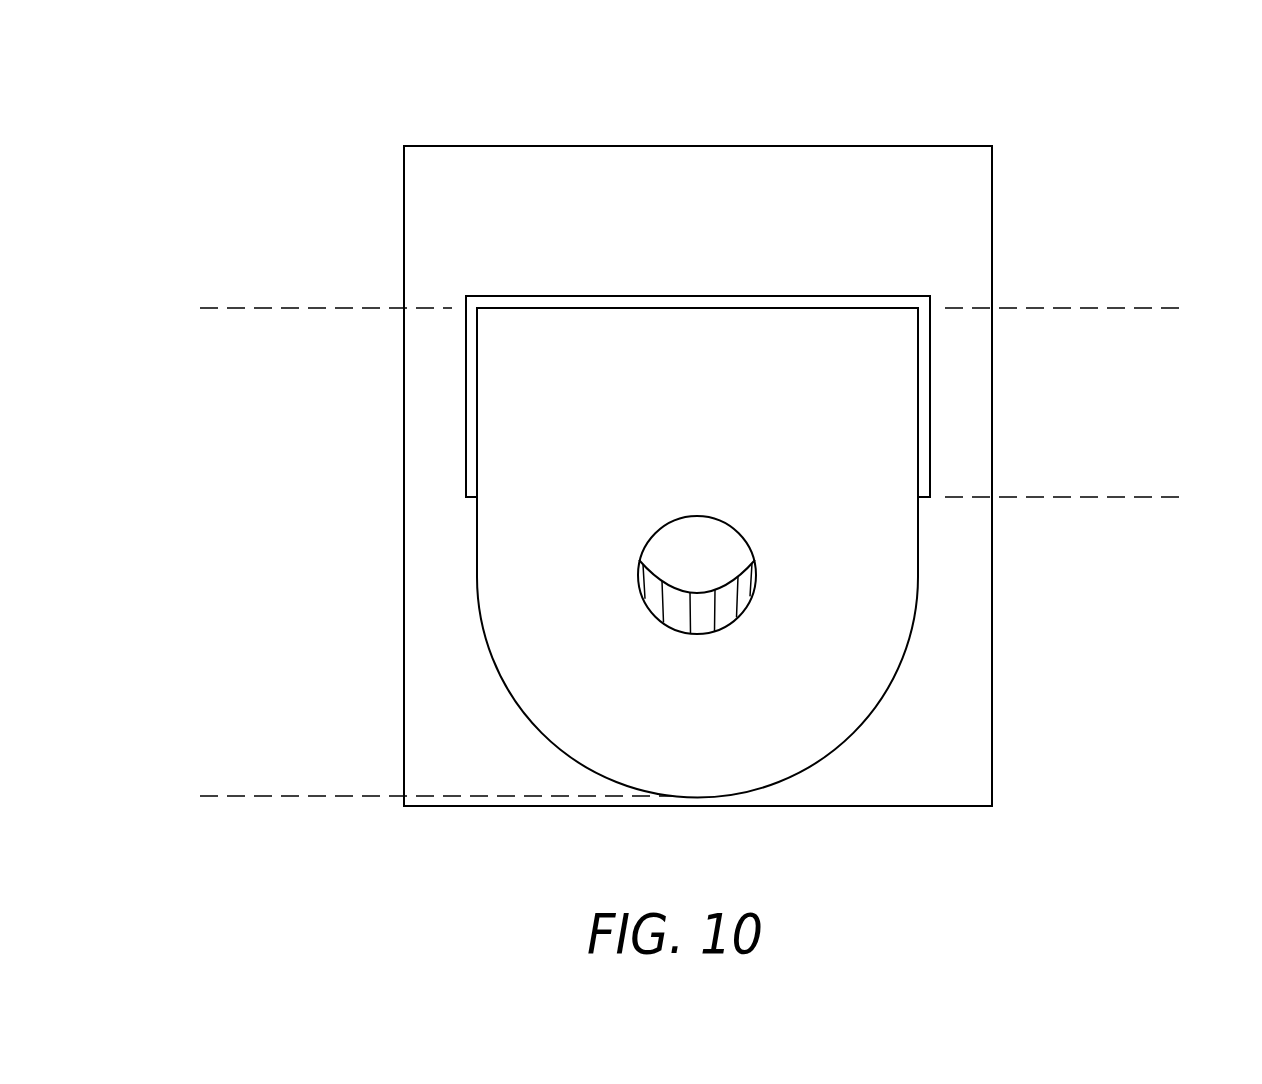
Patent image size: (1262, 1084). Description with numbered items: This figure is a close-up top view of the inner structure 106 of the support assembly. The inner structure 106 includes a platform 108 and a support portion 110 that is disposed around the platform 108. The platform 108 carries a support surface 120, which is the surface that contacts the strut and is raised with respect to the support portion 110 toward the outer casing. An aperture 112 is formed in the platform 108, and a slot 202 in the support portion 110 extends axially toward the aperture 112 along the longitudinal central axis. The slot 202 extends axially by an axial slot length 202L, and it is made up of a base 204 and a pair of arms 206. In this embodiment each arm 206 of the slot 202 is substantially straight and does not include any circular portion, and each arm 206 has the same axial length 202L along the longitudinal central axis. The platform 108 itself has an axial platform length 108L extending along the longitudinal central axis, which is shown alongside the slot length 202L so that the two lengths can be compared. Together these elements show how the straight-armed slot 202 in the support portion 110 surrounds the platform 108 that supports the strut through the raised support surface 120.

The inner structure 106 is at (1113, 153).
The support portion 110 is at (491, 217).
The platform 108 is at (902, 660).
The axial platform length 108L is at (228, 308).
The aperture 112 is at (720, 553).
The support surface 120 is at (732, 696).
The slot 202 is at (922, 302).
The axial slot length 202L is at (1155, 308).
The base 204 is at (727, 302).
The arm 206 is at (470, 417).